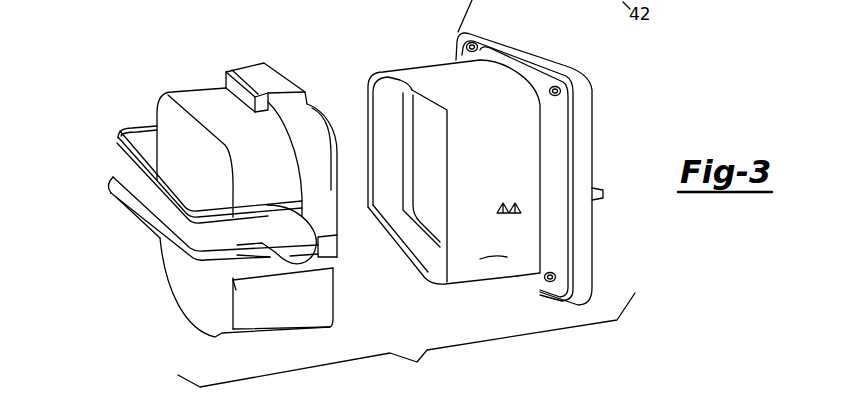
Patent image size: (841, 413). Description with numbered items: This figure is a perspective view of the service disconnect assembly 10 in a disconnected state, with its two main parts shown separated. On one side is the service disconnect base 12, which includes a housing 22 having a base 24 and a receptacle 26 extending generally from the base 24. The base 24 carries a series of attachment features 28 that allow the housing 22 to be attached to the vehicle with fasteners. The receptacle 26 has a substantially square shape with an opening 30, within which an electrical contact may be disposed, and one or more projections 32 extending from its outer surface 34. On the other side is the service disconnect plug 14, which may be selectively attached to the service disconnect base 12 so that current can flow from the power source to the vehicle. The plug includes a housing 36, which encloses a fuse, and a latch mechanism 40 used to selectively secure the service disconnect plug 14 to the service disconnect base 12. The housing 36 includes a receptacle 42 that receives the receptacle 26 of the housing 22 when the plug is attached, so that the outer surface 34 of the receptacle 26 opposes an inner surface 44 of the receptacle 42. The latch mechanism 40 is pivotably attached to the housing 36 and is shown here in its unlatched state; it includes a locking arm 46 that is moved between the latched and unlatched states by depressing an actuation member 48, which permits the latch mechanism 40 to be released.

The service disconnect assembly 10 is at (128, 95).
The service disconnect base 12 is at (600, 88).
The service disconnect plug 14 is at (152, 165).
The housing 22 is at (500, 28).
The base 24 is at (587, 137).
The receptacle 26 is at (523, 187).
The attachment features 28 is at (555, 90).
The opening 30 is at (393, 108).
The projections 32 is at (512, 210).
The outer surface 34 is at (497, 258).
The housing 36 is at (152, 114).
The latch mechanism 40 is at (130, 188).
The receptacle 42 is at (303, 308).
The inner surface 44 is at (277, 312).
The locking arm 46 is at (170, 222).
The actuation member 48 is at (247, 88).